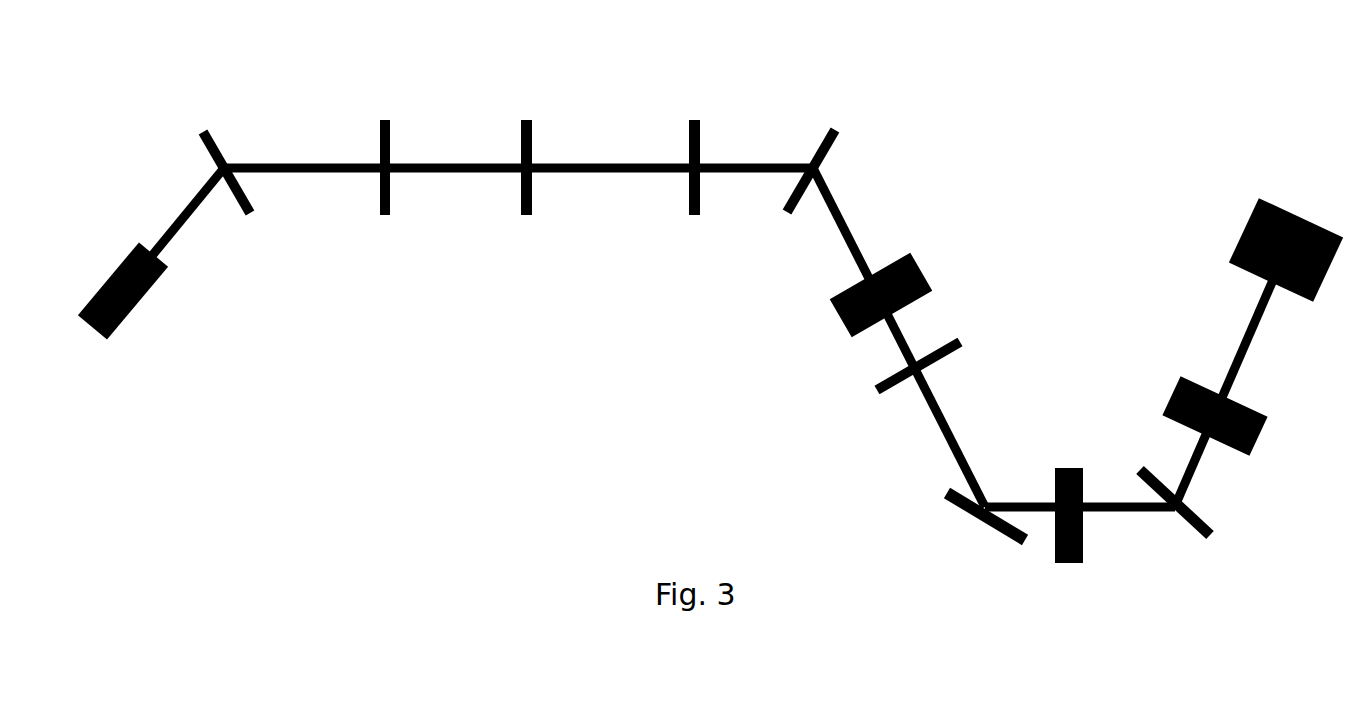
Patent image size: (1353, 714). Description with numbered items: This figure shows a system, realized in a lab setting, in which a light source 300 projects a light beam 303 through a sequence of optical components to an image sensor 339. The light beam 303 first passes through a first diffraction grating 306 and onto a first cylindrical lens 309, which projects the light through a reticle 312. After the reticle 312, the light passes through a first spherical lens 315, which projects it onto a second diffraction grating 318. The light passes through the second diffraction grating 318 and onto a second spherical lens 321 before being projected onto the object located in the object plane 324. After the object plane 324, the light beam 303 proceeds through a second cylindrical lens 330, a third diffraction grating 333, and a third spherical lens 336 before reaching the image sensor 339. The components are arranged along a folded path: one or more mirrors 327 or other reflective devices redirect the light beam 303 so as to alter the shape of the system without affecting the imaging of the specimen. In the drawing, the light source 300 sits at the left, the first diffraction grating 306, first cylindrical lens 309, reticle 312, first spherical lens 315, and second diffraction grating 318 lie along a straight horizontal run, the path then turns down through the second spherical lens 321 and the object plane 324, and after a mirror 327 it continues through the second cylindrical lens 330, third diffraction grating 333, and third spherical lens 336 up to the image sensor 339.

The light source 300 is at (113, 254).
The light beam 303 is at (164, 195).
The first diffraction grating 306 is at (228, 138).
The first cylindrical lens 309 is at (413, 127).
The reticle 312 is at (556, 126).
The first spherical lens 315 is at (732, 124).
The second diffraction grating 318 is at (858, 146).
The second spherical lens 321 is at (897, 250).
The object plane 324 is at (949, 330).
The mirror 327 is at (931, 492).
The second cylindrical lens 330 is at (1045, 485).
The third diffraction grating 333 is at (1153, 471).
The third spherical lens 336 is at (1249, 401).
The image sensor 339 is at (1286, 222).